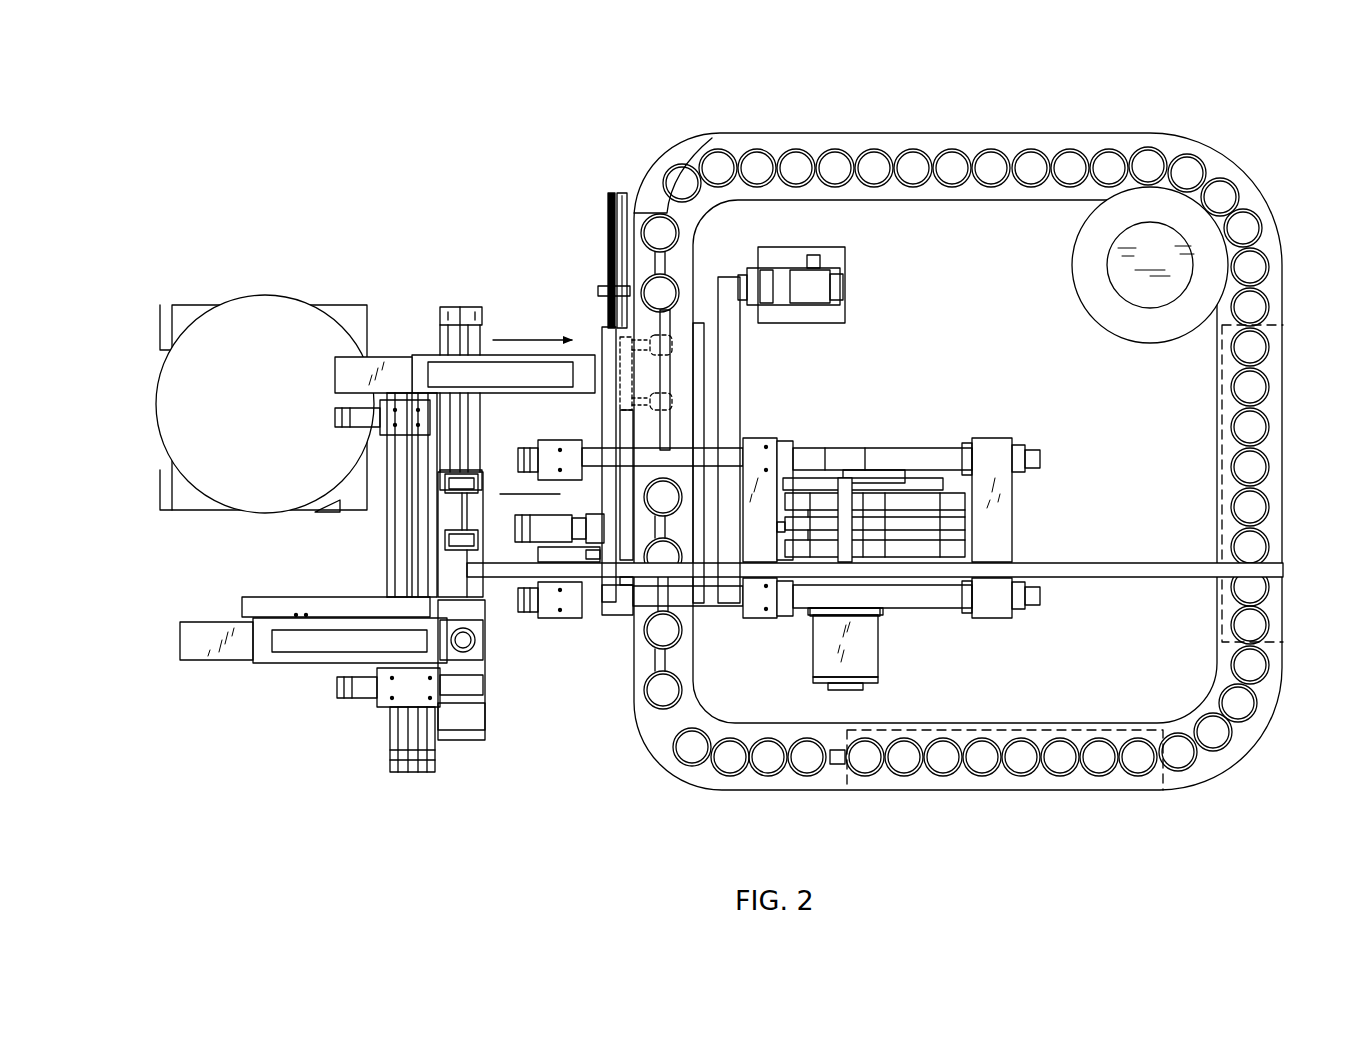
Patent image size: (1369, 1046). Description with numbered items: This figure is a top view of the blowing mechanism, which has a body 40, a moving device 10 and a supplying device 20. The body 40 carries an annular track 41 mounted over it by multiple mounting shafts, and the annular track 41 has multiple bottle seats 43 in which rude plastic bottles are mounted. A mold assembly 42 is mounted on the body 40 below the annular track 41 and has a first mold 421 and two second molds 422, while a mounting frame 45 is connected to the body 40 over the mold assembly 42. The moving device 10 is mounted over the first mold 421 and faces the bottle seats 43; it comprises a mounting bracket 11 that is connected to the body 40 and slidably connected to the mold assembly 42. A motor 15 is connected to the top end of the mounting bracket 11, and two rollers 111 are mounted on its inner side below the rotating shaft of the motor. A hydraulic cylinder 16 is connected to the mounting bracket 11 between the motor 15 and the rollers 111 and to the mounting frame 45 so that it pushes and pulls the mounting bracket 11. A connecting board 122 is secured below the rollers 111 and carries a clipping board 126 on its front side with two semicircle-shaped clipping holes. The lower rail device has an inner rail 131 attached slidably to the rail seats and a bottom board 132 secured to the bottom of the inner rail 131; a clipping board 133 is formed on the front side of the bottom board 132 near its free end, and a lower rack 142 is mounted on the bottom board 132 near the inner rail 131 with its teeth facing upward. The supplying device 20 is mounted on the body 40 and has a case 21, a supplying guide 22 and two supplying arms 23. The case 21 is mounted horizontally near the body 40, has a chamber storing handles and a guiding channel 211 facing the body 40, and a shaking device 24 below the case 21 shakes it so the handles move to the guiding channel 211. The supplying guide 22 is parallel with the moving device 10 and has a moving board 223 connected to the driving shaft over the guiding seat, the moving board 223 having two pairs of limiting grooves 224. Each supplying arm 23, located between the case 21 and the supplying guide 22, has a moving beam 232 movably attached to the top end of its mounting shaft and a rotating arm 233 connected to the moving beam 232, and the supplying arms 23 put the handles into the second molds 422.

The moving device 10 is at (598, 437).
The mounting bracket 11 is at (603, 330).
The motor 15 is at (572, 567).
The hydraulic cylinder 16 is at (550, 528).
The supplying device 20 is at (485, 277).
The case 21 is at (262, 300).
The supplying guide 22 is at (458, 755).
The supplying arm 23 is at (245, 690).
The shaking device 24 is at (186, 494).
The body 40 is at (1108, 76).
The annular track 41 is at (1272, 289).
The mold assembly 42 is at (820, 430).
The bottle seats 43 is at (795, 162).
The mounting frame 45 is at (1137, 578).
The rollers 111 is at (623, 426).
The connecting board 122 is at (623, 512).
The clipping board 126 is at (658, 528).
The inner rail 131 is at (620, 192).
The bottom board 132 is at (608, 198).
The clipping board 133 is at (642, 214).
The lower rack 142 is at (606, 290).
The guiding channel 211 is at (340, 512).
The moving board 223 is at (472, 716).
The limiting grooves 224 is at (450, 548).
The moving beam 232 is at (345, 378).
The rotating arm 233 is at (474, 642).
The first mold 421 is at (540, 493).
The second molds 422 is at (719, 545).